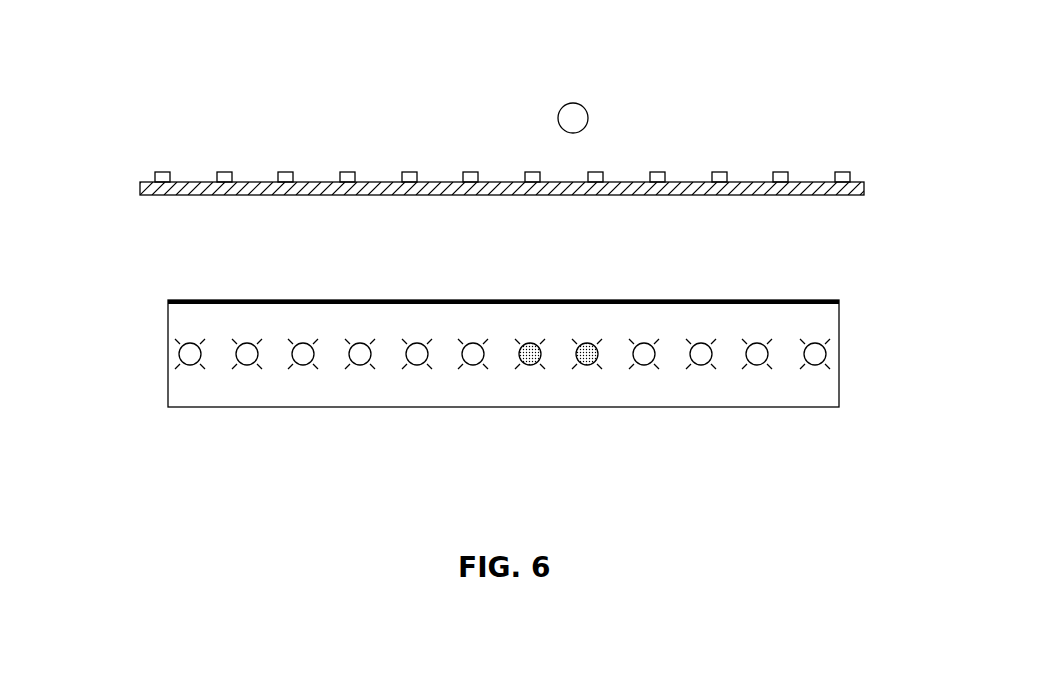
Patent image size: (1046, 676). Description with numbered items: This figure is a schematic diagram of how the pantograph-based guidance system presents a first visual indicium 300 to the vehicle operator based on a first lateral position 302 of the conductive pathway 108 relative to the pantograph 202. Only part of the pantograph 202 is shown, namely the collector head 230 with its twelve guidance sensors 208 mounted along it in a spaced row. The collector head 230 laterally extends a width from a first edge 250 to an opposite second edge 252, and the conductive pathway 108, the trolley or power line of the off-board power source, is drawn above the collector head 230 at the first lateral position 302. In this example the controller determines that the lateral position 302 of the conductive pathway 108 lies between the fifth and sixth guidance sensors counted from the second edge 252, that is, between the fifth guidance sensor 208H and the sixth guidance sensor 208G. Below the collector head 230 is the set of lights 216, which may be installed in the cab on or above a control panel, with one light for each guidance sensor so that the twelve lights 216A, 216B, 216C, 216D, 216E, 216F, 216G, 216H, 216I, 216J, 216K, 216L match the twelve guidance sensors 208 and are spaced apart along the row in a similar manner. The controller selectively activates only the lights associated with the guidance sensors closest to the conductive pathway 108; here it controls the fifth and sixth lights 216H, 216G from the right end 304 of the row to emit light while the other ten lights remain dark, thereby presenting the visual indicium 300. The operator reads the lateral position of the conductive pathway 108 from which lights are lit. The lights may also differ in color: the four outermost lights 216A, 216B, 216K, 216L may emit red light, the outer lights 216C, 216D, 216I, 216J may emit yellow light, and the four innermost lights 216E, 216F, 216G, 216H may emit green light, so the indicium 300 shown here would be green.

The pantograph 202 is at (502, 164).
The first edge 250 is at (138, 188).
The guidance sensors 208 is at (162, 172).
The collector head 230 is at (325, 182).
The sixth guidance sensor 208G is at (533, 172).
The fifth guidance sensor 208H is at (595, 172).
The second edge 252 is at (864, 190).
The conductive pathway 108 is at (586, 108).
The first lateral position 302 is at (574, 94).
The first visual indicium 300 is at (502, 381).
The right end 304 is at (848, 351).
The lights 216 is at (468, 406).
The first light 216A is at (190, 354).
The second light 216B is at (247, 354).
The third light 216C is at (303, 354).
The fourth light 216D is at (360, 354).
The fifth light 216E is at (417, 354).
The sixth light 216F is at (473, 354).
The sixth light from the right end 216G is at (530, 354).
The fifth light from the right end 216H is at (587, 354).
The ninth light 216I is at (644, 354).
The tenth light 216J is at (701, 354).
The eleventh light 216K is at (757, 354).
The twelfth light 216L is at (815, 354).